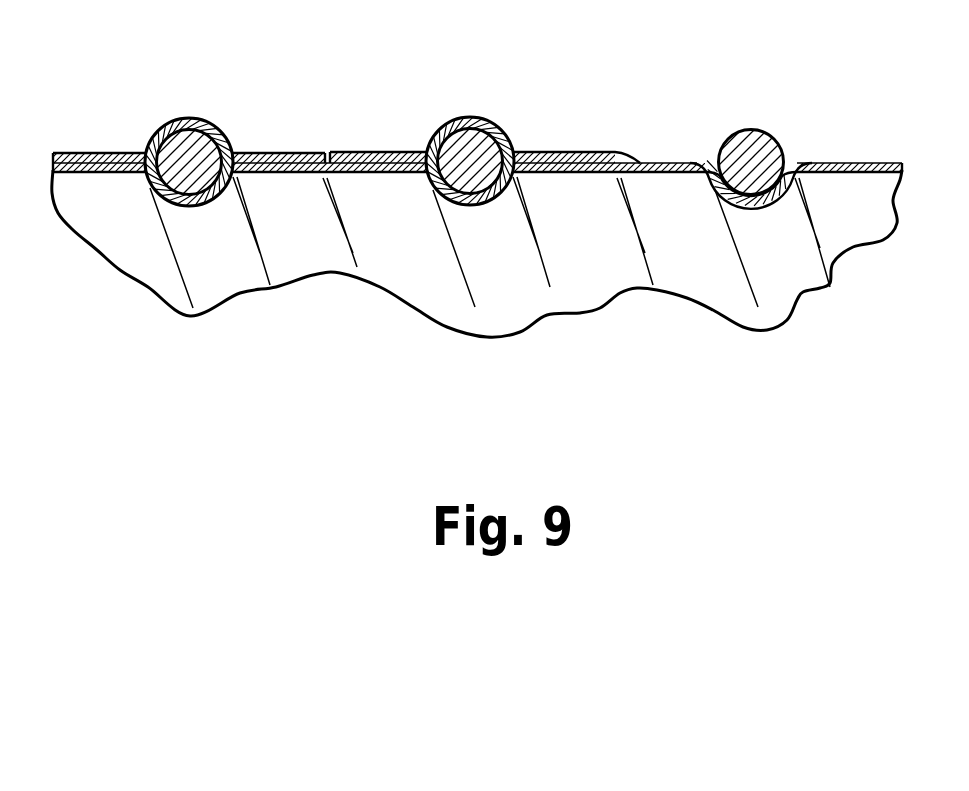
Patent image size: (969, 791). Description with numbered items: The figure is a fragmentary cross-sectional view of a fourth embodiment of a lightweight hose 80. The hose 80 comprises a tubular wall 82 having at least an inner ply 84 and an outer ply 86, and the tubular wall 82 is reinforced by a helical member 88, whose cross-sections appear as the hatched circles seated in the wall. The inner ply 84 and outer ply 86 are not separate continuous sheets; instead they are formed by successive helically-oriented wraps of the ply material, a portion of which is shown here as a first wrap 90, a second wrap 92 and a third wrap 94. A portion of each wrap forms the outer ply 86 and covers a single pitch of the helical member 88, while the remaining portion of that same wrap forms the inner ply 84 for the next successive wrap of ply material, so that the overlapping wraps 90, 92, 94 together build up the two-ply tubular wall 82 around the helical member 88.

The lightweight hose 80 is at (394, 58).
The tubular wall 82 is at (599, 262).
The inner ply 84 is at (357, 172).
The outer ply 86 is at (268, 152).
The helical member 88 is at (763, 150).
The first wrap 90 is at (108, 170).
The second wrap 92 is at (412, 172).
The third wrap 94 is at (672, 173).